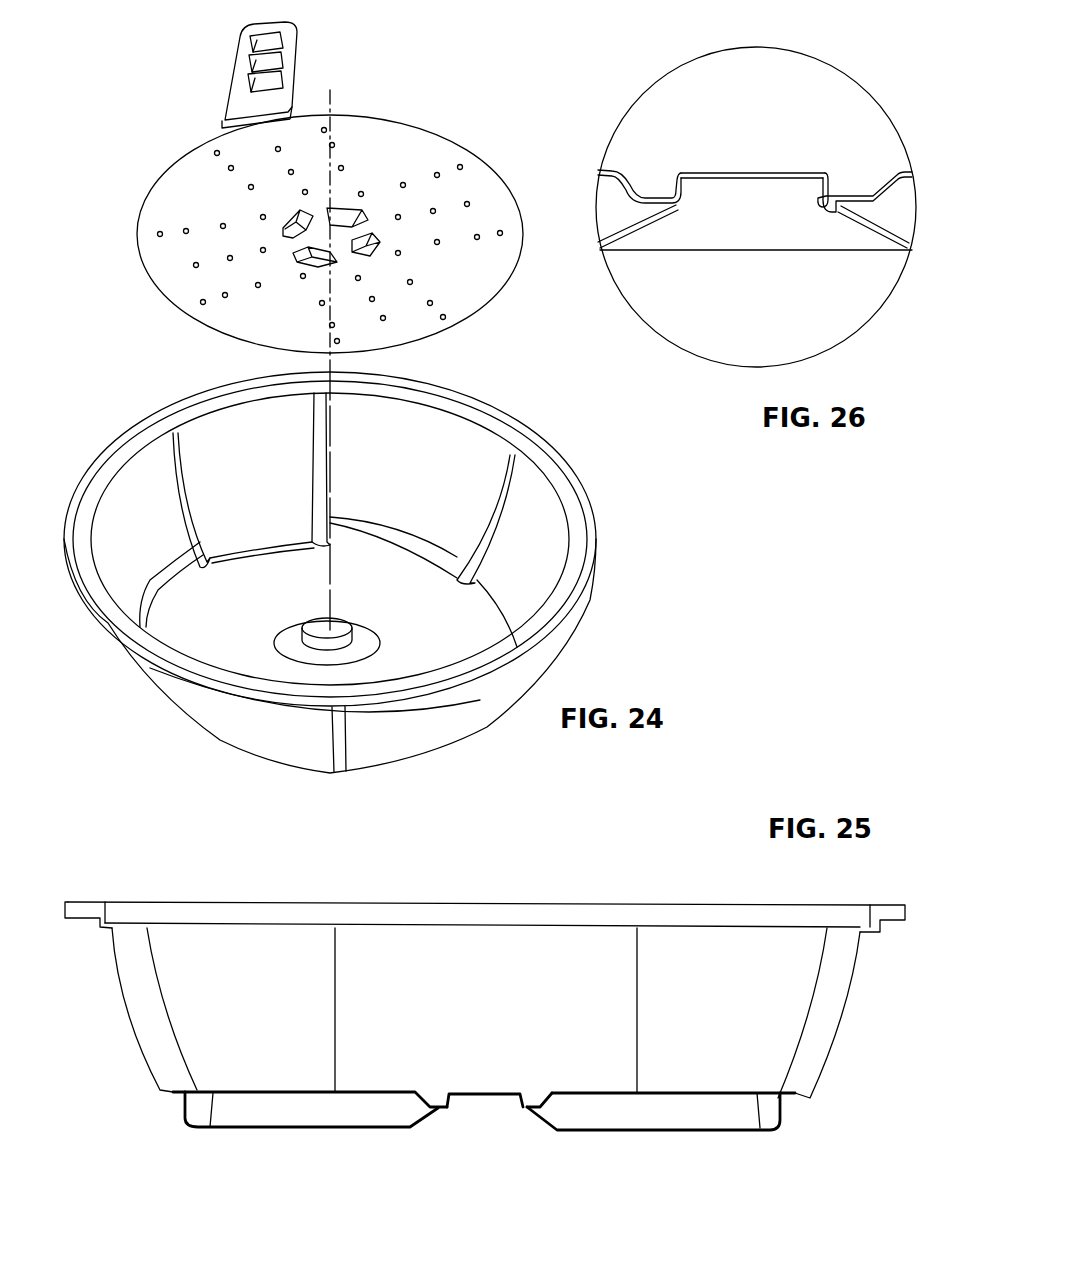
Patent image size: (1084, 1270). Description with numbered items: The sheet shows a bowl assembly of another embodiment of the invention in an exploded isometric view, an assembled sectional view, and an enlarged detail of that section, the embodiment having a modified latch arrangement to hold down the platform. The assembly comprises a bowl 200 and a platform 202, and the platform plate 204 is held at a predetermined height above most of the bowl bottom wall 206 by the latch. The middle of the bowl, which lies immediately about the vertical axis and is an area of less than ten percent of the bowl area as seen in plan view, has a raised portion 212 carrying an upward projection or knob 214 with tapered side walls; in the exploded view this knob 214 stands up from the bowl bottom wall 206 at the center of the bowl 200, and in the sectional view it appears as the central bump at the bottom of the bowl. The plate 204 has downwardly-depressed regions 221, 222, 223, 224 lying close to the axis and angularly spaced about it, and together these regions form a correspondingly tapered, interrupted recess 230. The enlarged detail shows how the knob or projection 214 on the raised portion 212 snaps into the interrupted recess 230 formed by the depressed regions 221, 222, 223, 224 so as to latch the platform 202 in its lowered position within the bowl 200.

In FIG. 24, the bowl 200 is at (182, 395).
In FIG. 24, the platform 202 is at (203, 130).
In FIG. 24, the platform plate 204 is at (462, 147).
In FIG. 24, the bowl bottom wall 206 is at (328, 582).
In FIG. 26, the raised portion 212 is at (656, 210).
In FIG. 24, the upward projection or knob 214 is at (320, 626).
In FIG. 26, the upward projection or knob 214 is at (690, 195).
In FIG. 25, the upward projection or knob 214 is at (472, 1100).
In FIG. 24, the downwardly-depressed region 221 is at (288, 218).
In FIG. 26, the downwardly-depressed region 221 is at (648, 196).
In FIG. 24, the downwardly-depressed region 222 is at (377, 247).
In FIG. 26, the downwardly-depressed region 222 is at (838, 198).
In FIG. 24, the downwardly-depressed region 223 is at (346, 206).
In FIG. 24, the downwardly-depressed region 224 is at (305, 258).
In FIG. 26, the tapered recess 230 is at (800, 190).